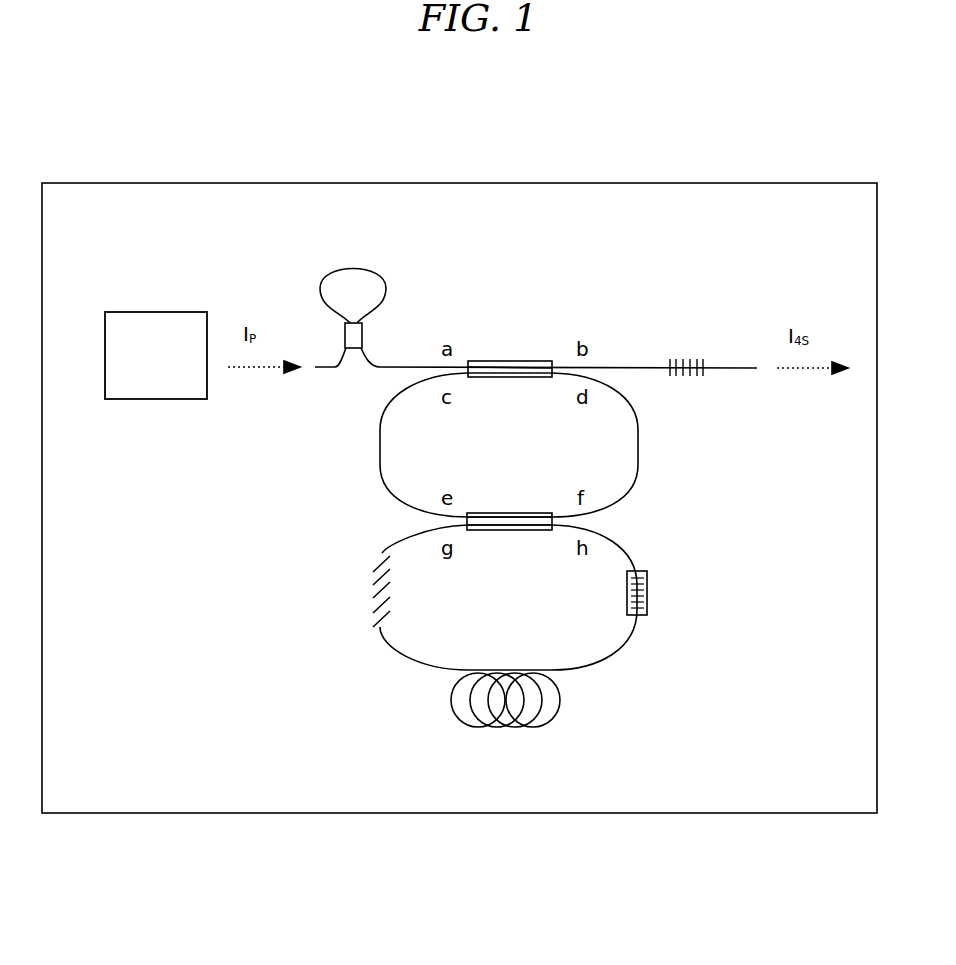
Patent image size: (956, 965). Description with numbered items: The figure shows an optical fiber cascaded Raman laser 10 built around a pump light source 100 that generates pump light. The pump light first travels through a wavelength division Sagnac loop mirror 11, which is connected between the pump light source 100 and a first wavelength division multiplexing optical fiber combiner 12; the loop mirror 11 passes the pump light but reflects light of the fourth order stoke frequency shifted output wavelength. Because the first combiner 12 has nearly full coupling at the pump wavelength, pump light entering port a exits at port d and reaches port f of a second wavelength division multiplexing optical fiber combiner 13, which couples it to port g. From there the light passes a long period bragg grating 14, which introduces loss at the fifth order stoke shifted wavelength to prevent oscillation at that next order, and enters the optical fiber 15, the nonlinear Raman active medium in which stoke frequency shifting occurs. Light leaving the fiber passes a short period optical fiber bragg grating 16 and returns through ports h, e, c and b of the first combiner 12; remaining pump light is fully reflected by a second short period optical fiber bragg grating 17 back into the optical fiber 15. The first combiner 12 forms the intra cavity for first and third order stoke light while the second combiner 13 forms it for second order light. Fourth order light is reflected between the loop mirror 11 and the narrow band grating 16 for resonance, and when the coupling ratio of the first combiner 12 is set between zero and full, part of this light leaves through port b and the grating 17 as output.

The optical fiber cascaded Raman laser 10 is at (552, 178).
The pump light source 100 is at (156, 312).
The wavelength division Sagnac loop mirror 11 is at (361, 270).
The first wavelength division multiplexing optical fiber combiner 12 is at (522, 361).
The second wavelength division multiplexing optical fiber combiner 13 is at (509, 505).
The long period bragg grating 14 is at (366, 597).
The optical fiber 15 is at (518, 729).
The short period optical fiber bragg grating 16 is at (648, 592).
The second short period optical fiber bragg grating 17 is at (686, 358).